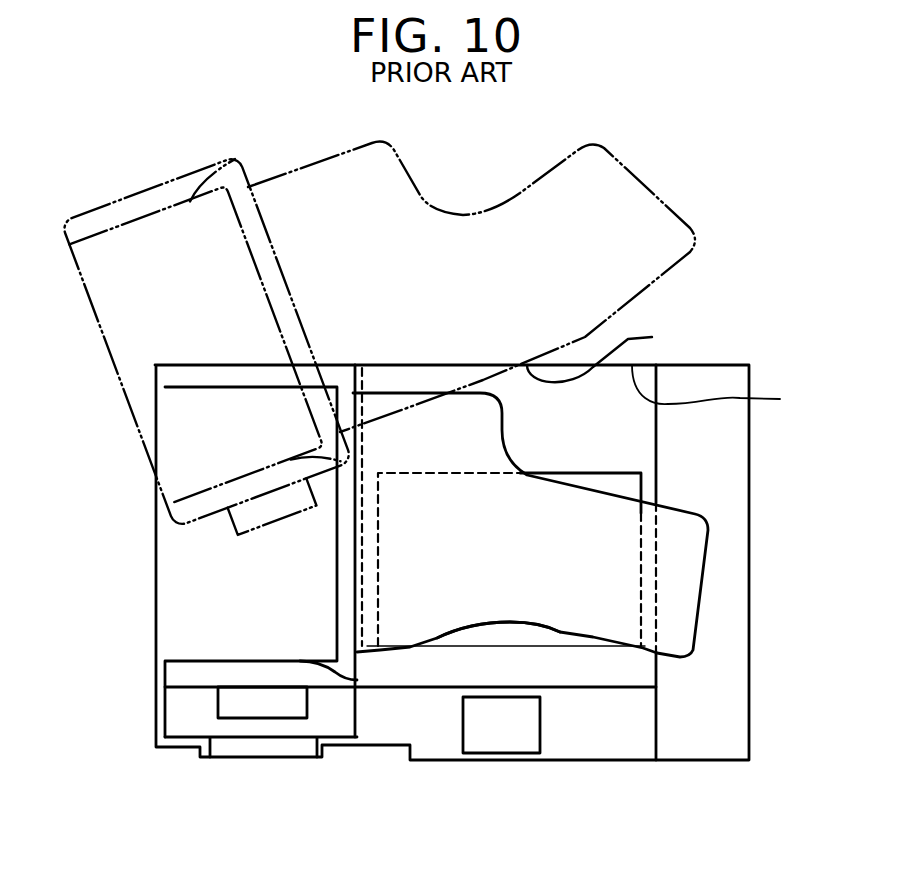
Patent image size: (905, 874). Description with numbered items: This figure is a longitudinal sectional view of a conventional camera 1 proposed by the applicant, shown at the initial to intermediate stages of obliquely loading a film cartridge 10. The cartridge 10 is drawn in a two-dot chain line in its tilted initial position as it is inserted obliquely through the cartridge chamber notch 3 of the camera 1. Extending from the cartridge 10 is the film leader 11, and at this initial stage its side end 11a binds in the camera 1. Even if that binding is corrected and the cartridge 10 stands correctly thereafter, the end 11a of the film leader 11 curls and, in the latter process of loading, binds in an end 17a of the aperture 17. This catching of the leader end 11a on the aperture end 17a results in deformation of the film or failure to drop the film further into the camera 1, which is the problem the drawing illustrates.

The camera 1 is at (481, 562).
The cartridge chamber notch 3 is at (157, 500).
The cartridge 10 is at (104, 328).
The film leader 11 is at (653, 208).
The side end of the film leader 11a is at (353, 787).
The aperture 17 is at (680, 483).
The end of the aperture 17a is at (520, 642).